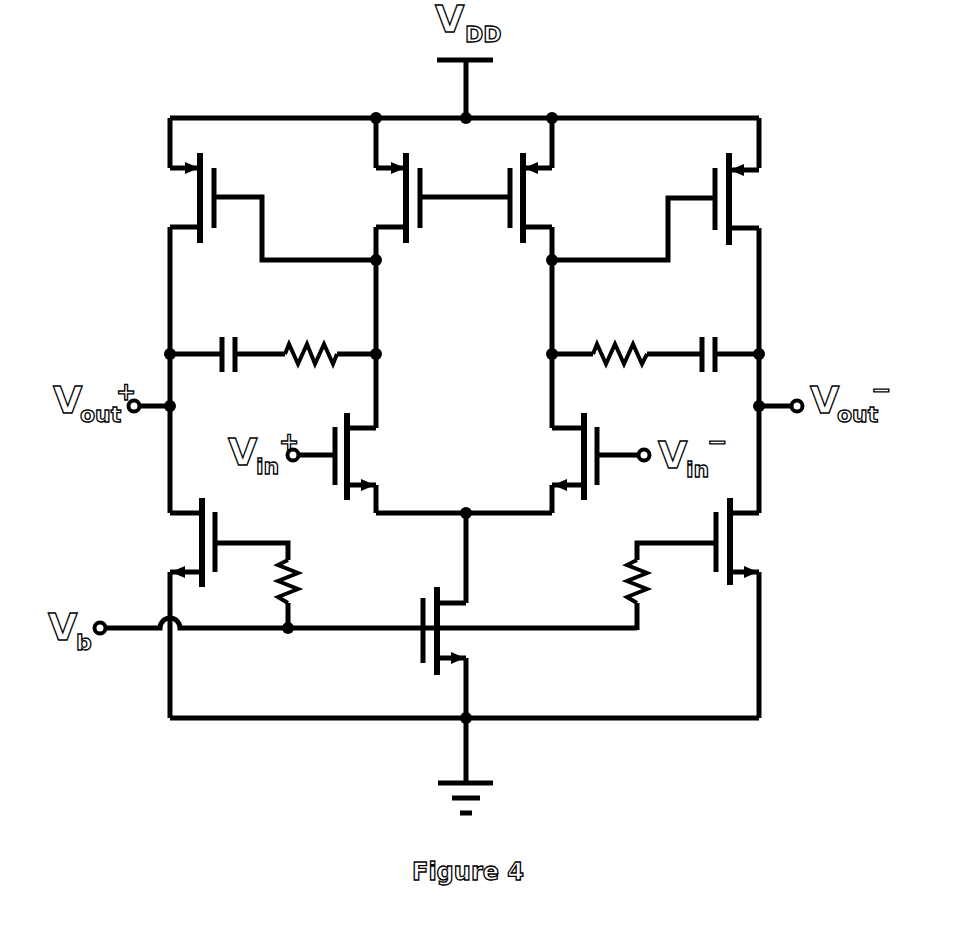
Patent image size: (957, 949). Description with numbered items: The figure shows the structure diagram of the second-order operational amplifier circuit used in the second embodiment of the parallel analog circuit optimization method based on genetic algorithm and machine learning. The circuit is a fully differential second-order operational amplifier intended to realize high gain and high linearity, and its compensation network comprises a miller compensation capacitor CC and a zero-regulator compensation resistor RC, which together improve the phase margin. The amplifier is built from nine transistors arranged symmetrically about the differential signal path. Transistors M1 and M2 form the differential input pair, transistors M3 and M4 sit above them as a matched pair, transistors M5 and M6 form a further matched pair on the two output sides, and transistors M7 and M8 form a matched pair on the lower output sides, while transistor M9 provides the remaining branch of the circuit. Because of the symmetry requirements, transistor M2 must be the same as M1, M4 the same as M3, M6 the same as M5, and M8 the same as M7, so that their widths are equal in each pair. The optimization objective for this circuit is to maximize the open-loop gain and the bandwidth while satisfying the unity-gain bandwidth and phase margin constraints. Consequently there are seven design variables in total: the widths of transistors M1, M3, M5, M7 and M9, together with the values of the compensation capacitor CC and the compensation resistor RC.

The transistor M1 is at (376, 456).
The transistor M2 is at (555, 456).
The transistor M3 is at (421, 198).
The transistor M4 is at (554, 198).
The transistor M5 is at (250, 206).
The transistor M6 is at (678, 206).
The transistor M7 is at (213, 563).
The transistor M8 is at (716, 564).
The transistor M9 is at (418, 632).
The compensation capacitor CC is at (464, 331).
The compensation resistor RC is at (466, 328).